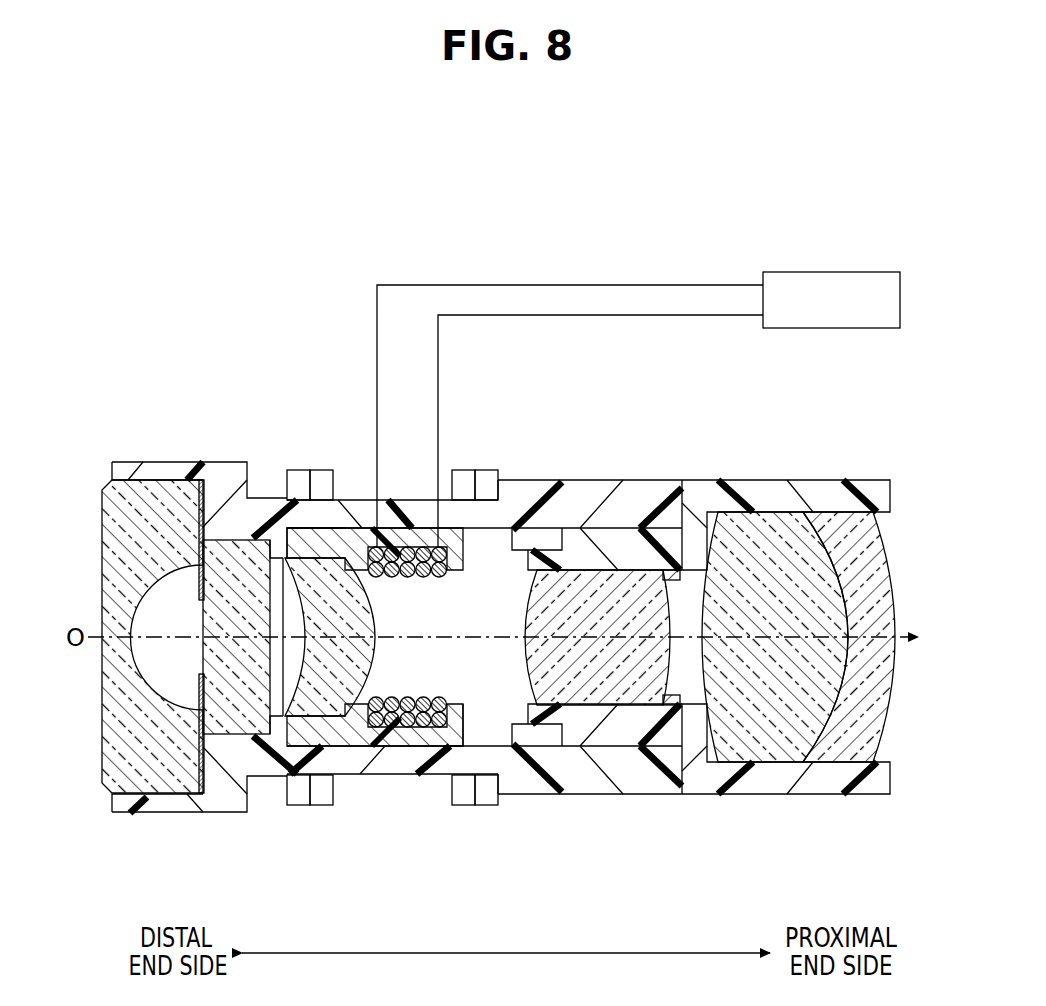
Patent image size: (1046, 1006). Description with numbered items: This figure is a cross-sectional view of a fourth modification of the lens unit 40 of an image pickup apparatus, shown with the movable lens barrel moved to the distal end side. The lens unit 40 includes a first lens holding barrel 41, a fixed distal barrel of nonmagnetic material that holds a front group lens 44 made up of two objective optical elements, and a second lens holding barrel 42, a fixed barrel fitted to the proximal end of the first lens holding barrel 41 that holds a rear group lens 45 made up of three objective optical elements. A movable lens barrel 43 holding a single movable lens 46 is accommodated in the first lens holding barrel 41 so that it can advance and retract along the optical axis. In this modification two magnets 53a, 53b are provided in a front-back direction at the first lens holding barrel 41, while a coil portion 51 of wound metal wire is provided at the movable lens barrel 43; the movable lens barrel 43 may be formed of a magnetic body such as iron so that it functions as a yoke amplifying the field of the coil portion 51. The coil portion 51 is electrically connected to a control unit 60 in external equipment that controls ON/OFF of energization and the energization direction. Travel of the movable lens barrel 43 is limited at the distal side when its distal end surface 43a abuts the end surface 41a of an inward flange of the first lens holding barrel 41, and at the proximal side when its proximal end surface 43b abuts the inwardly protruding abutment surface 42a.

The lens unit 40 is at (525, 412).
The first lens holding barrel 41 is at (397, 630).
The end surface 41a is at (303, 745).
The second lens holding barrel 42 is at (694, 630).
The abutment surface 42a is at (513, 735).
The movable lens barrel 43 is at (378, 639).
The distal end surface 43a is at (313, 746).
The proximal end surface 43b is at (470, 742).
The front group lens 44 is at (174, 680).
The rear group lens 45 is at (740, 680).
The movable lens 46 is at (363, 664).
The coil portion 51 is at (400, 547).
The magnet 53a is at (311, 470).
The magnet 53b is at (477, 470).
The control unit 60 is at (835, 272).